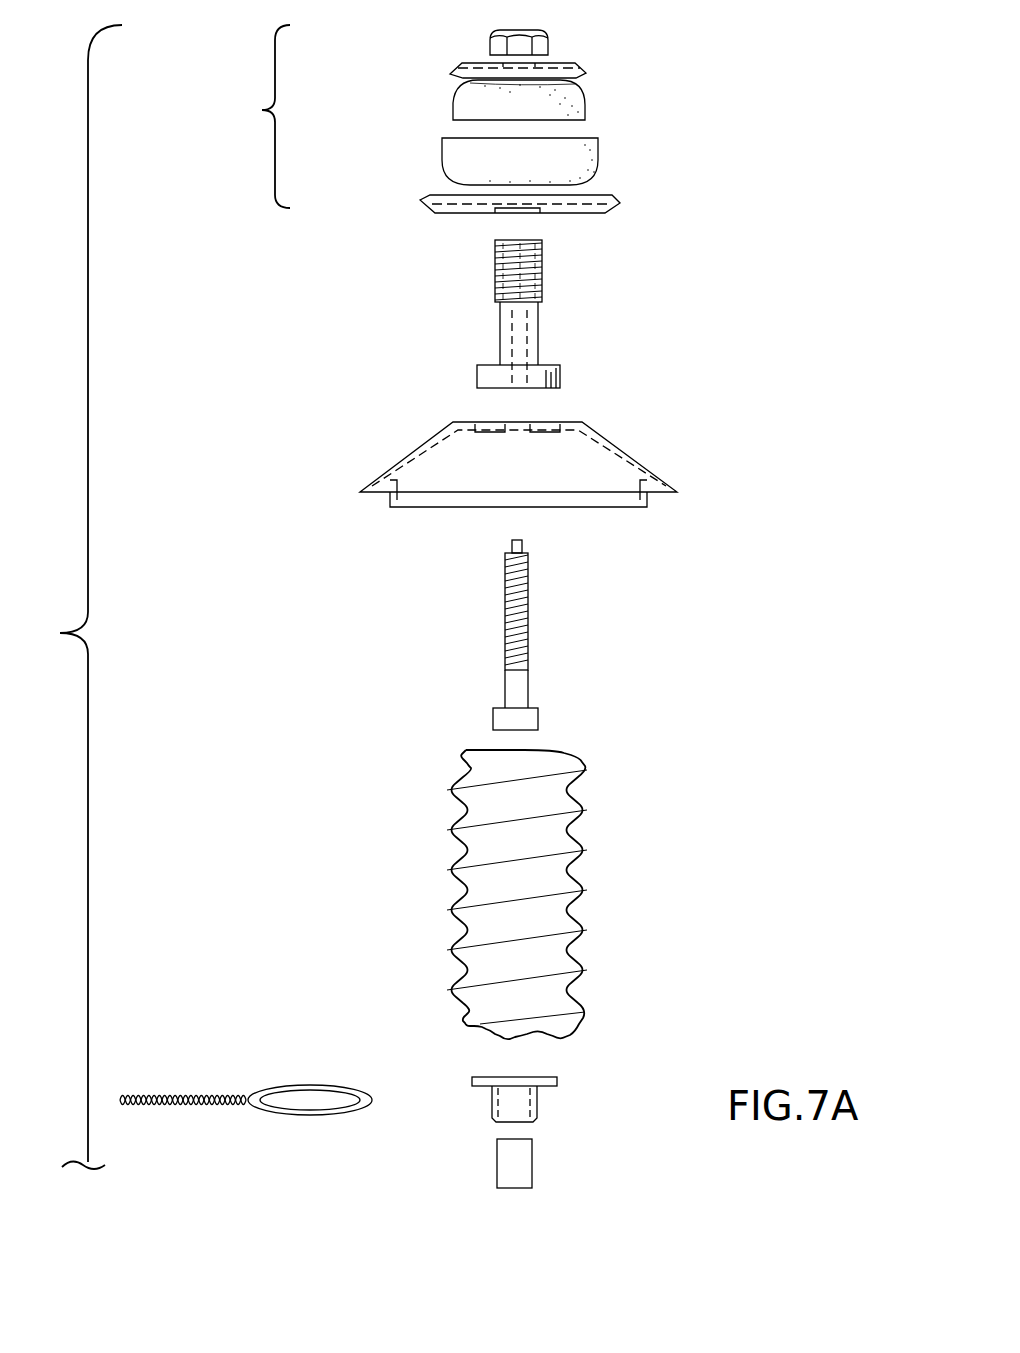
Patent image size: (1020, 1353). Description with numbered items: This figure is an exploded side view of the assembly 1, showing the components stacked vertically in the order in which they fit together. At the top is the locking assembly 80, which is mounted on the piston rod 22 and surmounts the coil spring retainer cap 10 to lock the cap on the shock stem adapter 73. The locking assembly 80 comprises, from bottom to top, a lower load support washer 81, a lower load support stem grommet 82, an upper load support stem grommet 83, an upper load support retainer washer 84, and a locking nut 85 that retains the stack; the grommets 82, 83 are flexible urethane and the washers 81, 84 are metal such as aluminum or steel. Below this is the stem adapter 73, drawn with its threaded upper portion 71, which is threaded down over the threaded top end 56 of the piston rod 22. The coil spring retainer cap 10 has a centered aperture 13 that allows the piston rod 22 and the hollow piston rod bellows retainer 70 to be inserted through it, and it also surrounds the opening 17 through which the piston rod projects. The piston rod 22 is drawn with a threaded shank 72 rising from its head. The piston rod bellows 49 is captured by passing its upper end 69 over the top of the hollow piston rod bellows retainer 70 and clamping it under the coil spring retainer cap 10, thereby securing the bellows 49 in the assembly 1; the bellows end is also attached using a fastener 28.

The assembly 1 is at (78, 597).
The locking assembly 80 is at (259, 116).
The locking nut 85 is at (486, 43).
The upper load support retainer washer 84 is at (587, 72).
The upper load support stem grommet 83 is at (453, 112).
The lower load support stem grommet 82 is at (598, 155).
The lower load support washer 81 is at (423, 200).
The threaded stud 71 is at (517, 314).
The shock stem adapter 73 is at (500, 322).
The coil spring retainer cap 10 is at (513, 442).
The centered aperture 13 is at (578, 430).
The opening 17 is at (528, 422).
The threaded screw 72 is at (513, 548).
The threaded top end 56 is at (544, 617).
The piston rod 22 is at (538, 720).
The piston rod bellows 49 is at (456, 885).
The upper end of the piston rod bellows 69 is at (476, 752).
The fastener 28 is at (306, 1086).
The hollow piston rod bellows retainer 70 is at (537, 1105).